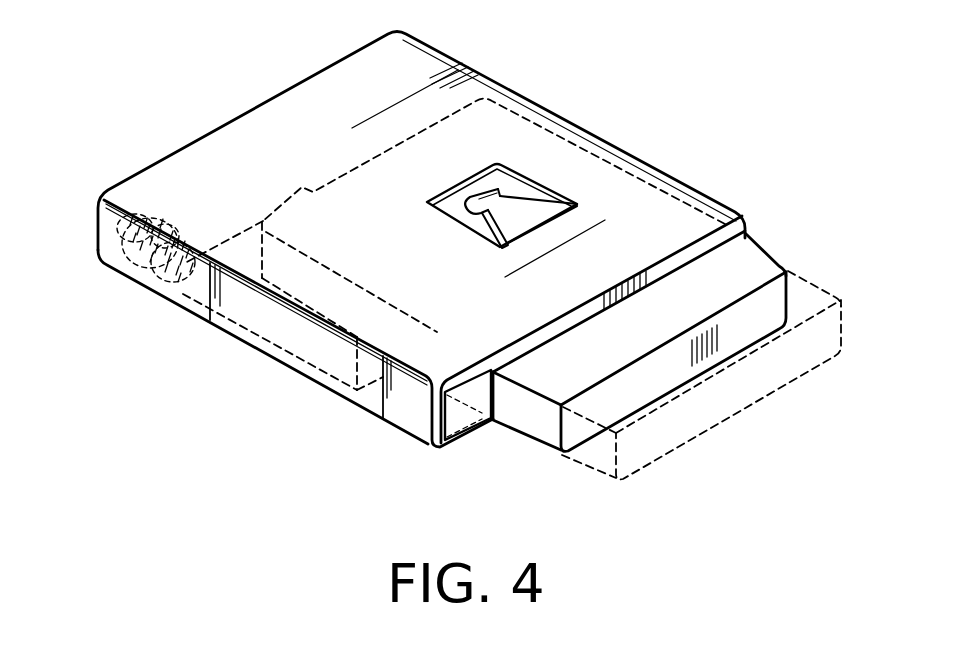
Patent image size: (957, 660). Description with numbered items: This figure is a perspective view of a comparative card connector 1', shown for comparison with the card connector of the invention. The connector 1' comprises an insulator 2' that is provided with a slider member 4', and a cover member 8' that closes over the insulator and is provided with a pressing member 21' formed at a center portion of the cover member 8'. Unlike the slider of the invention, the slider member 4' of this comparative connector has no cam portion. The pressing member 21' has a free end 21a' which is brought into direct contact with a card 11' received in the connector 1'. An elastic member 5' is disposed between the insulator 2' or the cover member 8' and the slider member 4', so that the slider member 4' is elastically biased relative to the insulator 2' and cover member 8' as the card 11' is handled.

The connector 1' is at (421, 240).
The insulator 2' is at (482, 422).
The slider member 4' is at (454, 245).
The elastic member 5' is at (156, 196).
The cover member 8' is at (569, 130).
The card 11' is at (667, 339).
The pressing member 21' is at (523, 156).
The free end 21a' is at (514, 124).